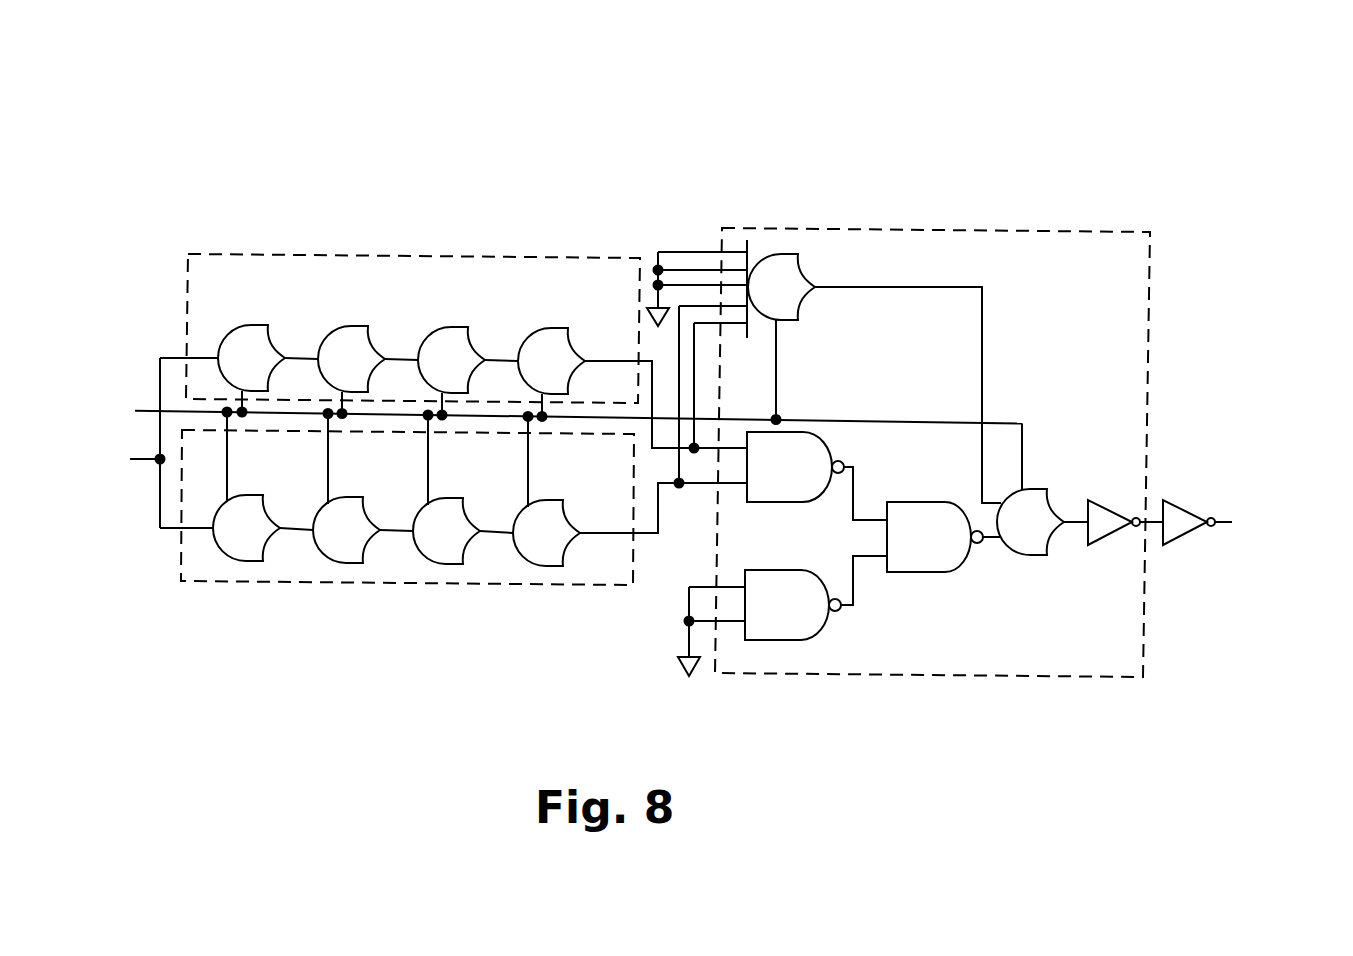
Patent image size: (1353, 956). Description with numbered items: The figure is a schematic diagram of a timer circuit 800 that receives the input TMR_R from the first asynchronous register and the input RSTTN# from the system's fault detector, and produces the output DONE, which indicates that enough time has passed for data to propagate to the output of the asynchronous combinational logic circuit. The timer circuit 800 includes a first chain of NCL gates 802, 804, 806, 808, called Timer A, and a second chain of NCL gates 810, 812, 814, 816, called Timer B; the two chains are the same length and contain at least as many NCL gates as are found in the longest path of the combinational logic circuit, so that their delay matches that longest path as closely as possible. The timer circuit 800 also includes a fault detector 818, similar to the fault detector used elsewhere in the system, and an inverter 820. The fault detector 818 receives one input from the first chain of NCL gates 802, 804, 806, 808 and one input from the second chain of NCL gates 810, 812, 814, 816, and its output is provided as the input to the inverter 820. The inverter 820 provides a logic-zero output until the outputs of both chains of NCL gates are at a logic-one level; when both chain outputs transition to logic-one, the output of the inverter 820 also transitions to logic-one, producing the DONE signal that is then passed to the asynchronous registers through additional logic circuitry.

The timer circuit 800 is at (1042, 108).
The NCL gate 802 is at (252, 326).
The NCL gate 804 is at (352, 327).
The NCL gate 806 is at (452, 328).
The NCL gate 808 is at (552, 329).
The NCL gate 810 is at (247, 495).
The NCL gate 812 is at (347, 497).
The NCL gate 814 is at (447, 498).
The NCL gate 816 is at (547, 500).
The fault detector 818 is at (908, 228).
The inverter 820 is at (1186, 510).